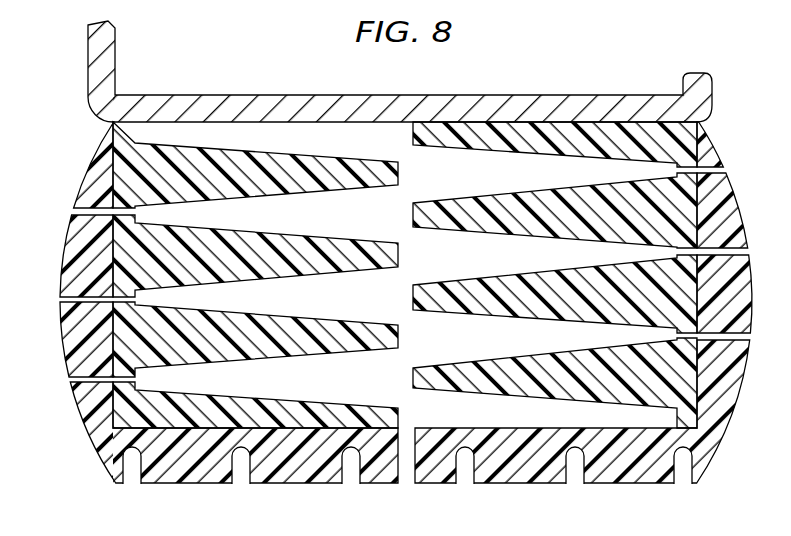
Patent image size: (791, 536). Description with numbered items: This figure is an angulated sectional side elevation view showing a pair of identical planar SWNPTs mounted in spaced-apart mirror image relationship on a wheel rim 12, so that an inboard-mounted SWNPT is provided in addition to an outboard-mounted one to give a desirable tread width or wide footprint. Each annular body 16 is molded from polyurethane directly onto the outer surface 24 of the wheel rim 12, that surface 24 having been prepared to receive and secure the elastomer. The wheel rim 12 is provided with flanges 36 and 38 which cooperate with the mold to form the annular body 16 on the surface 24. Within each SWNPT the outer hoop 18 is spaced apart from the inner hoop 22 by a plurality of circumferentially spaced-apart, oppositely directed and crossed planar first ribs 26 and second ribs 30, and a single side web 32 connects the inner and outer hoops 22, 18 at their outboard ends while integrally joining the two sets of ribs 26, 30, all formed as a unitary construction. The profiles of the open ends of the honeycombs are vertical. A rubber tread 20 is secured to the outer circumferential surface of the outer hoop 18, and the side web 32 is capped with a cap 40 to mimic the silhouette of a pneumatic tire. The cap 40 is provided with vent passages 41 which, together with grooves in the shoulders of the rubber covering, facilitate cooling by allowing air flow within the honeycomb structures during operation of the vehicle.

The wheel rim 12 is at (389, 71).
The flange 38 is at (92, 75).
The flange 36 is at (690, 74).
The annular body 16 is at (399, 316).
The cap 40 is at (69, 302).
The vent passages 41 is at (63, 298).
The second ribs 30 is at (367, 188).
The side web 32 is at (134, 128).
The inner hoop 22 is at (315, 402).
The outer hoop 18 is at (515, 275).
The surface 24 is at (371, 123).
The first ribs 26 is at (498, 199).
The rubber tread 20 is at (292, 485).